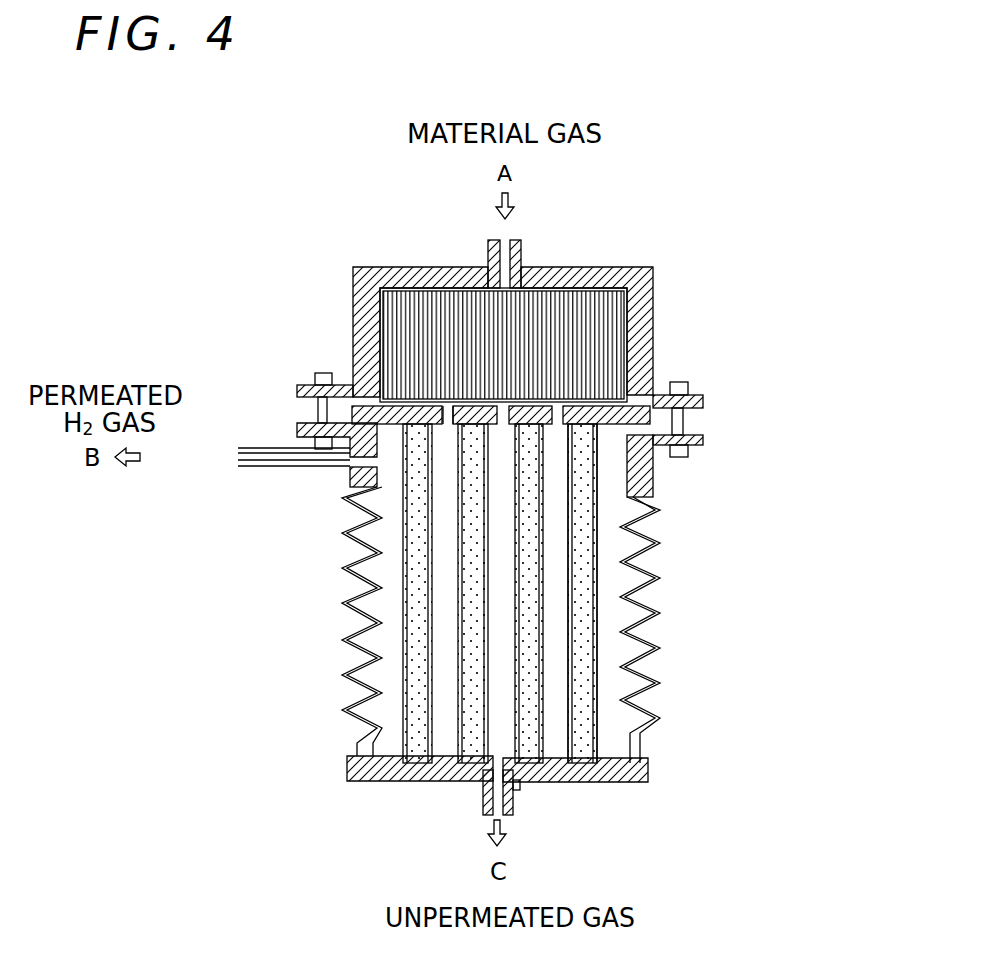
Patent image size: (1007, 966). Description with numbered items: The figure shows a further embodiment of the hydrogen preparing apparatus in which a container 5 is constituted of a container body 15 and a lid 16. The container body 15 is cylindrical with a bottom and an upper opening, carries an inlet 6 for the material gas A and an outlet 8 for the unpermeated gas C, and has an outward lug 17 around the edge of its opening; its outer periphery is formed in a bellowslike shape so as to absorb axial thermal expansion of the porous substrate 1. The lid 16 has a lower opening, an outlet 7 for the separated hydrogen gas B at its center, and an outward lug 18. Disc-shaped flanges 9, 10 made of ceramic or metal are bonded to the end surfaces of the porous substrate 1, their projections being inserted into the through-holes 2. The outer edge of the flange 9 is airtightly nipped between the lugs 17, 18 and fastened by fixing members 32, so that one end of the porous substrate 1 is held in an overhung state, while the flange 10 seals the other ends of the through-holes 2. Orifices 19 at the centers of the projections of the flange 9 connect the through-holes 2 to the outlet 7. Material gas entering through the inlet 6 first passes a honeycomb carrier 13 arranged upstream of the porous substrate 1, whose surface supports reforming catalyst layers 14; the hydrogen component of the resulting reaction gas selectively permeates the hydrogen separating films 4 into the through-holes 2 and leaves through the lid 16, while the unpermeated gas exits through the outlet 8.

The porous substrate 1 is at (597, 645).
The through-holes 2 is at (553, 678).
The hydrogen separating films 4 is at (573, 553).
The container 5 is at (881, 422).
The inlet 6 is at (521, 247).
The outlet 7 is at (270, 468).
The outlet 8 is at (513, 795).
The flange 9 is at (653, 422).
The flange 10 is at (648, 772).
The honeycomb carrier 13 is at (432, 312).
The reforming catalyst layers 14 is at (590, 353).
The container body 15 is at (656, 472).
The lid 16 is at (656, 279).
The outward lug 17 is at (705, 440).
The outward lug 18 is at (705, 395).
The orifices 19 is at (450, 420).
The fixing members 32 is at (678, 382).